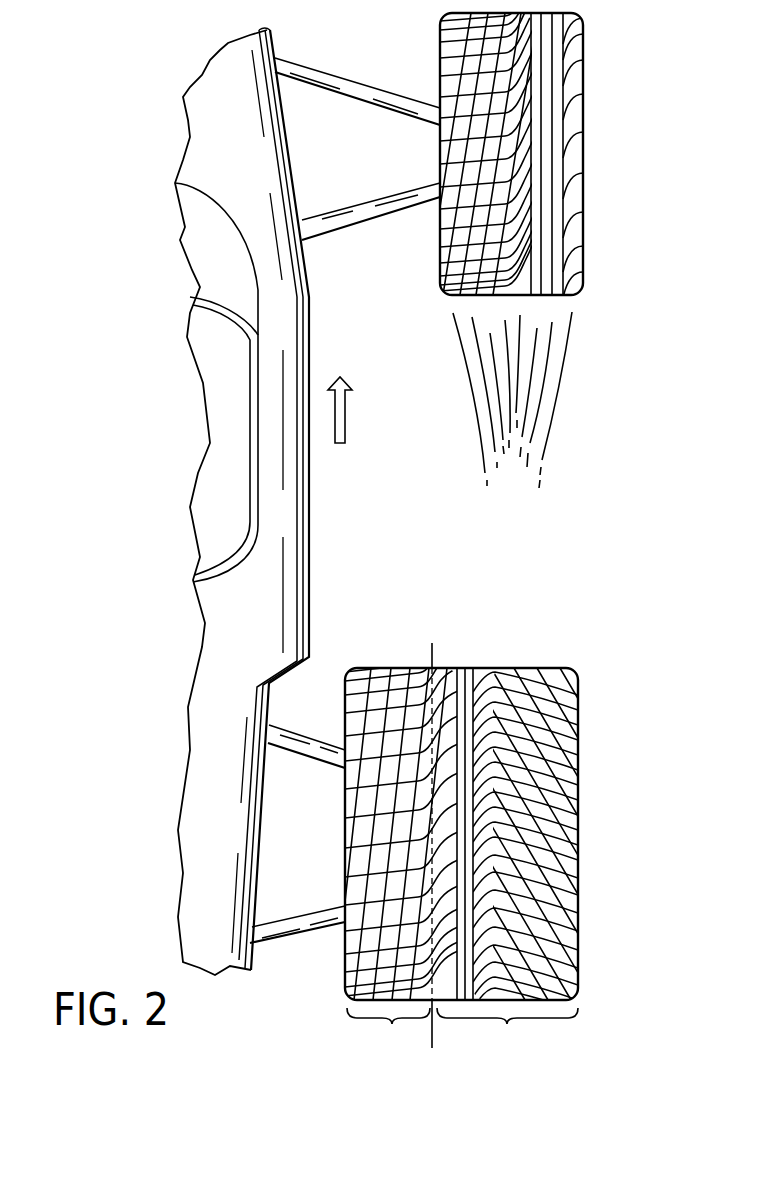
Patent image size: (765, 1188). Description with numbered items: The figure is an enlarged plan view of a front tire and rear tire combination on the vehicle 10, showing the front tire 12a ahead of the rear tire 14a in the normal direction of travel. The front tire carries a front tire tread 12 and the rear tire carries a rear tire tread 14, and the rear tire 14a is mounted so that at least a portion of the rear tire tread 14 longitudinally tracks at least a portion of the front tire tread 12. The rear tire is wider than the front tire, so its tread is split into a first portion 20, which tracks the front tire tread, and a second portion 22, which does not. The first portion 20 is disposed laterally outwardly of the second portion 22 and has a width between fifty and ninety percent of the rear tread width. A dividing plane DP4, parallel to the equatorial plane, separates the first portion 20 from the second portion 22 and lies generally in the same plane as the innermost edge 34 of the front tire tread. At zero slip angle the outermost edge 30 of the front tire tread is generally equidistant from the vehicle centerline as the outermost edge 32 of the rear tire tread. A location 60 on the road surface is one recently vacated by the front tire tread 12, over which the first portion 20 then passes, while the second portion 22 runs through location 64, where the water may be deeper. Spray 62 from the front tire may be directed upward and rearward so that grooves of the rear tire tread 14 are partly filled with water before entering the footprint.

The vehicle 10 is at (313, 473).
The front tire tread 12 is at (532, 149).
The front tire 12a is at (592, 187).
The rear tire tread 14 is at (547, 827).
The rear tire 14a is at (597, 730).
The first portion 20 is at (628, 782).
The second portion 22 is at (396, 841).
The outermost edge of the front tire tread 30 is at (585, 147).
The outermost edge of the rear tire tread 32 is at (547, 860).
The innermost edge of the front tire tread 34 is at (437, 218).
The location on the road surface 60 is at (520, 632).
The spray 62 is at (528, 382).
The location 64 is at (382, 635).
The dividing plane DP4 is at (430, 845).